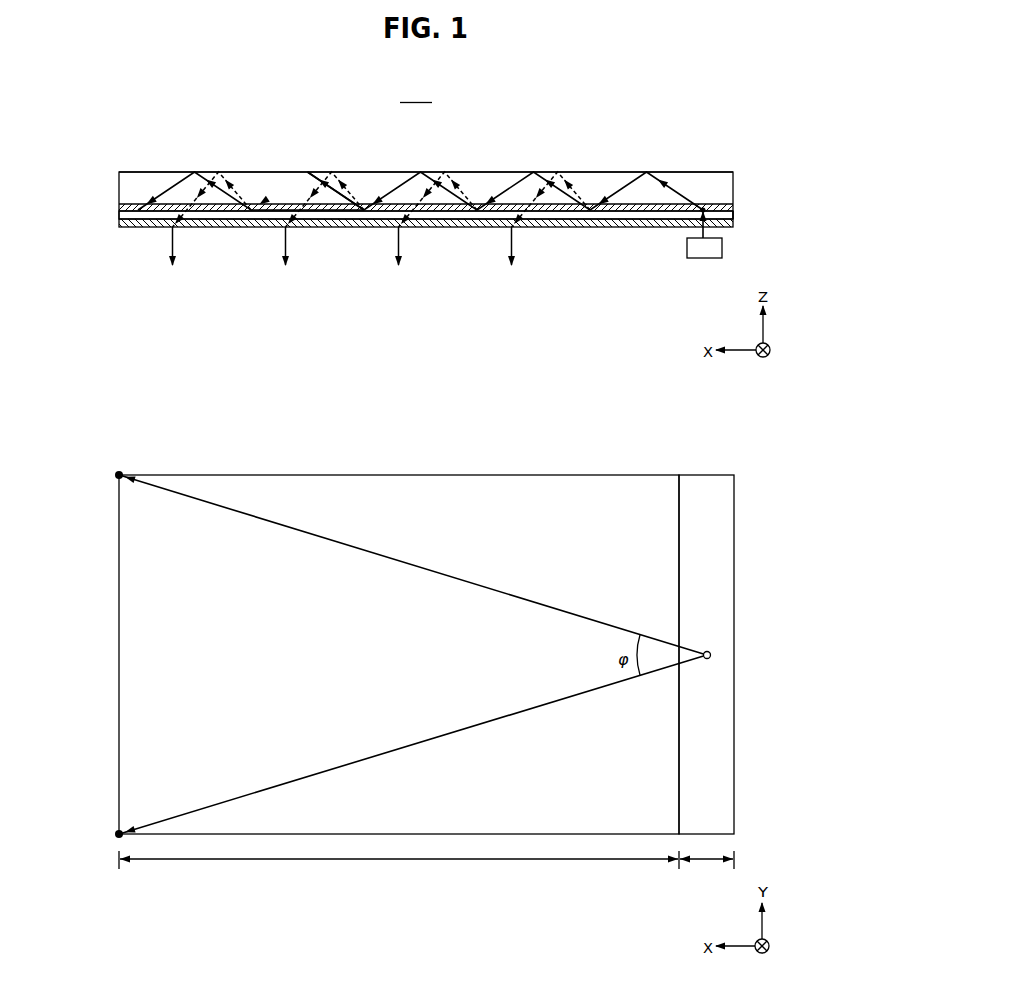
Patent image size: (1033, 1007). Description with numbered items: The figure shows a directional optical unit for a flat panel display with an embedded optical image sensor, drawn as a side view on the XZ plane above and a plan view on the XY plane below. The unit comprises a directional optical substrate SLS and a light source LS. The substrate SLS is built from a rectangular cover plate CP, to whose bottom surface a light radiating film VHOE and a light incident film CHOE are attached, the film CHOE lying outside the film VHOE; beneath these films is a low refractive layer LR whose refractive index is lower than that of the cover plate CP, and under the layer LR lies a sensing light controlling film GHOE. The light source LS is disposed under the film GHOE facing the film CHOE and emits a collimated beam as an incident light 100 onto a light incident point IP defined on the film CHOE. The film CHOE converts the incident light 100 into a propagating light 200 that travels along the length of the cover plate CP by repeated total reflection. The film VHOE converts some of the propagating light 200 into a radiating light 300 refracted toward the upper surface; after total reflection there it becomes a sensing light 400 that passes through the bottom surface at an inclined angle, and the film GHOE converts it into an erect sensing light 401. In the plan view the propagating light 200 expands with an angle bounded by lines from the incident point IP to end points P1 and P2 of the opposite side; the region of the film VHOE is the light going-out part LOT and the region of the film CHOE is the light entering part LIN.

The incident light 100 is at (686, 242).
The propagating light 200 is at (624, 187).
The radiating light 300 is at (573, 190).
The sensing light 400 is at (316, 186).
The erect sensing light 401 is at (171, 246).
The cover plate CP is at (119, 187).
The light radiating film VHOE is at (119, 207).
The light incident film CHOE is at (734, 205).
The low refractive layer LR is at (119, 215).
The sensing light controlling film GHOE is at (119, 226).
The light incident point IP is at (734, 217).
The light source LS is at (722, 250).
The one end point of the opposite side of the cover plate P1 is at (119, 470).
The other end point of the opposite side of the cover plate P2 is at (116, 838).
The light going-out part LOT is at (399, 865).
The light entering part LIN is at (707, 867).
The directional optical substrate SLS is at (426, 157).